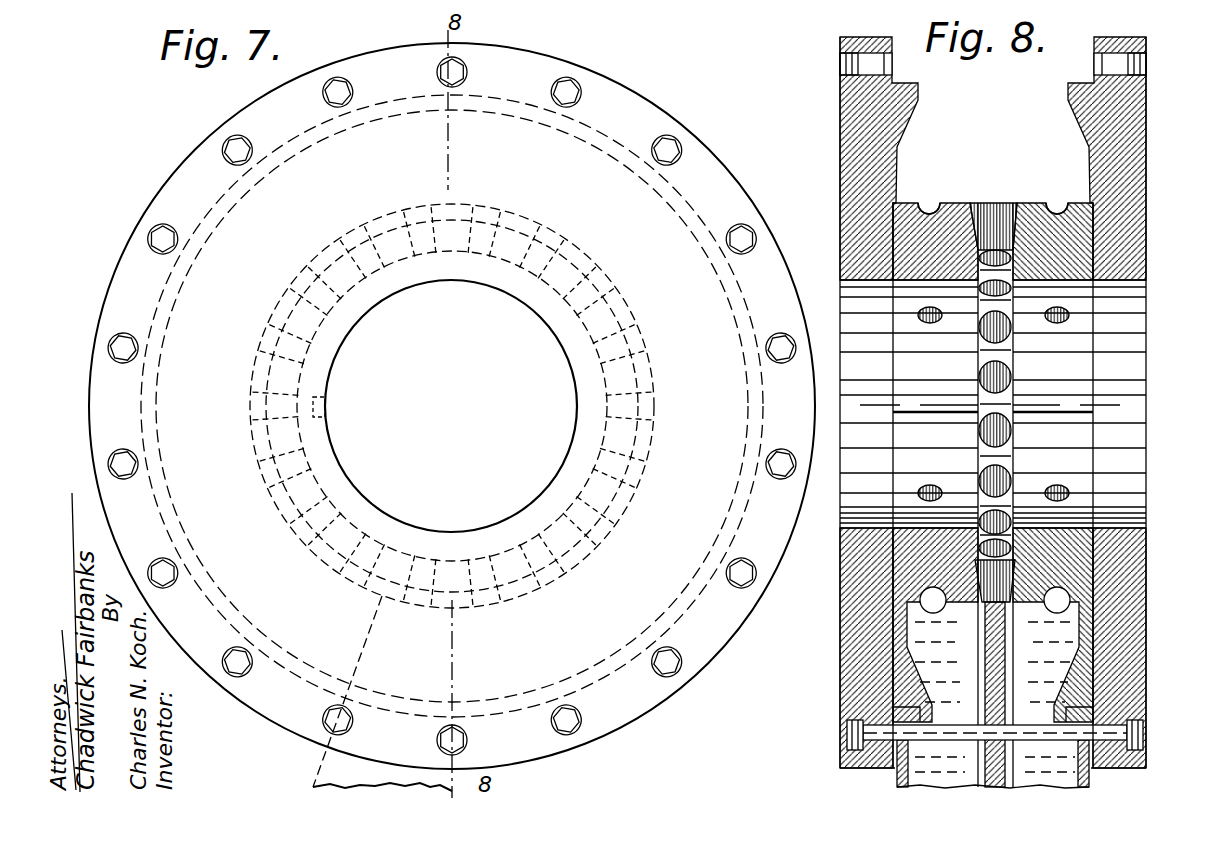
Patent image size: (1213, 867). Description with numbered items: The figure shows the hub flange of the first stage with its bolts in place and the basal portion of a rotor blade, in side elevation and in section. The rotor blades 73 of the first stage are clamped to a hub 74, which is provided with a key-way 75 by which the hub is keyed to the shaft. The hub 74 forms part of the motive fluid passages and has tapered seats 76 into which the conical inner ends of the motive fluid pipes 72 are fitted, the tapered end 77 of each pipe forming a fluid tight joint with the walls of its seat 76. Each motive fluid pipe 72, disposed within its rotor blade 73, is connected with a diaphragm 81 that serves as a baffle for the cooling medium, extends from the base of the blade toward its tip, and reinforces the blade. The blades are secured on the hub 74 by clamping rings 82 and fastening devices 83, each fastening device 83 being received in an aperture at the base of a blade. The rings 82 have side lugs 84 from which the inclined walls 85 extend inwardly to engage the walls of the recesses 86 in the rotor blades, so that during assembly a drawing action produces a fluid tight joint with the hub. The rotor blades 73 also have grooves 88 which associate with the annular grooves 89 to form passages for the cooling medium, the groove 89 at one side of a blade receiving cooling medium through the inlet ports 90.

In FIG. 8, the motive fluid pipe 72 is at (1097, 620).
In FIG. 7, the rotor blade 73 is at (382, 694).
In FIG. 8, the rotor blade 73 is at (1097, 777).
In FIG. 7, the hub 74 is at (657, 403).
In FIG. 8, the hub 74 is at (905, 570).
In FIG. 7, the key-way 75 is at (327, 405).
In FIG. 8, the key-way 75 is at (948, 412).
In FIG. 8, the tapered seat 76 is at (1015, 552).
In FIG. 8, the tapered end of motive fluid pipe 77 is at (1000, 582).
In FIG. 8, the diaphragm 81 is at (990, 758).
In FIG. 7, the clamping ring 82 is at (452, 406).
In FIG. 8, the clamping ring 82 is at (870, 618).
In FIG. 7, the fastening device 83 is at (168, 246).
In FIG. 8, the fastening device 83 is at (850, 733).
In FIG. 8, the side lug 84 is at (923, 707).
In FIG. 8, the inclined wall 85 is at (895, 672).
In FIG. 8, the recess 86 is at (1090, 680).
In FIG. 8, the groove 88 is at (933, 603).
In FIG. 7, the annular groove 89 is at (618, 498).
In FIG. 8, the annular groove 89 is at (937, 206).
In FIG. 7, the inlet port 90 is at (358, 318).
In FIG. 8, the inlet port 90 is at (925, 488).